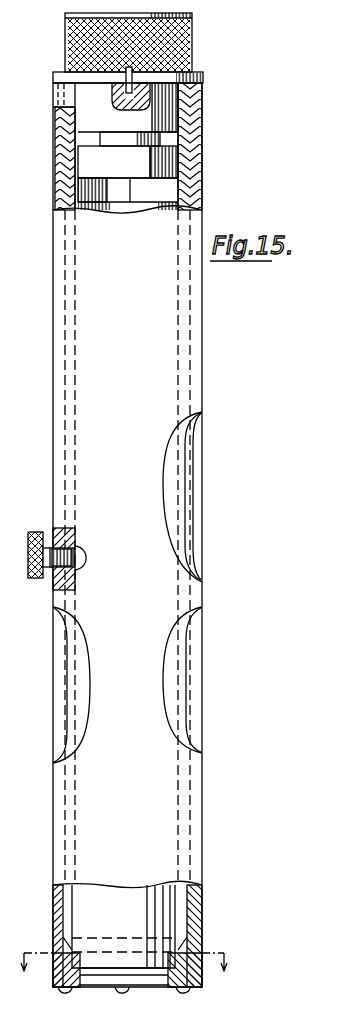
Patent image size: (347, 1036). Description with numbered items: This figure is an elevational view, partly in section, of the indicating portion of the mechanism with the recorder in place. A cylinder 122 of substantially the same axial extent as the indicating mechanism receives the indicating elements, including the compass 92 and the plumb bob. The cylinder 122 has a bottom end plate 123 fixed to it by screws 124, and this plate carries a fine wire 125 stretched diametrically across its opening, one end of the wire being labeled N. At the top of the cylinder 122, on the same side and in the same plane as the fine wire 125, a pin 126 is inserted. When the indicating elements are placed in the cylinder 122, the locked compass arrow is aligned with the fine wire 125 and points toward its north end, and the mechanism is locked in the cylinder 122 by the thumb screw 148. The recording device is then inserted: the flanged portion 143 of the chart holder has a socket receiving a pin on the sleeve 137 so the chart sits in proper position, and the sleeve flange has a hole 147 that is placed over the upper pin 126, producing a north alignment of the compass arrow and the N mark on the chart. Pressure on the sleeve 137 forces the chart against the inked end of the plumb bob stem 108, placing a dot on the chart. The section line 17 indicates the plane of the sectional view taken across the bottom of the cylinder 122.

The knurled knob 137 is at (68, 40).
The knob cap 126 is at (192, 55).
The cap plate and pin 147 is at (205, 78).
The tubular housing wall 122 is at (202, 127).
The inner sleeve 143 is at (165, 165).
The inner member 108 is at (131, 190).
The side adjusting knob 148 is at (44, 533).
The inner cup 92 is at (85, 920).
The left foot 123 is at (56, 988).
The bottom plate 125 is at (124, 970).
The right foot 124 is at (190, 990).
The section line 17- 17 is at (129, 974).